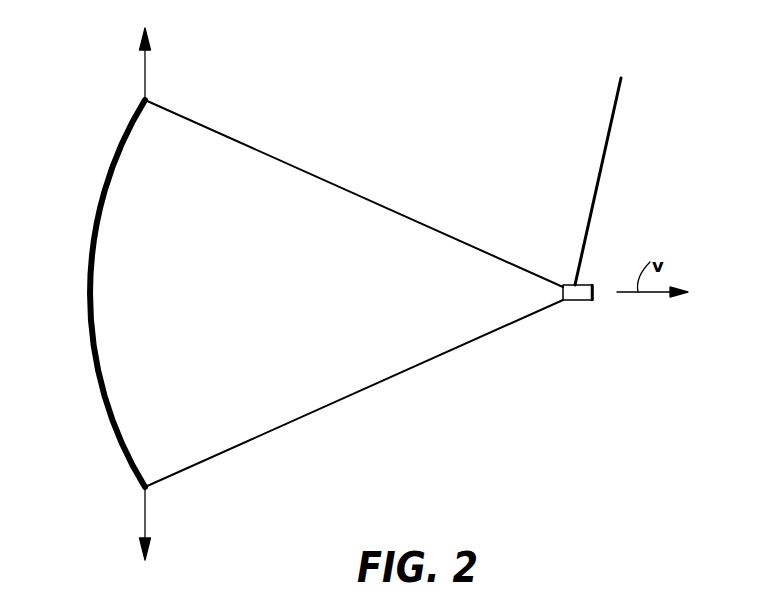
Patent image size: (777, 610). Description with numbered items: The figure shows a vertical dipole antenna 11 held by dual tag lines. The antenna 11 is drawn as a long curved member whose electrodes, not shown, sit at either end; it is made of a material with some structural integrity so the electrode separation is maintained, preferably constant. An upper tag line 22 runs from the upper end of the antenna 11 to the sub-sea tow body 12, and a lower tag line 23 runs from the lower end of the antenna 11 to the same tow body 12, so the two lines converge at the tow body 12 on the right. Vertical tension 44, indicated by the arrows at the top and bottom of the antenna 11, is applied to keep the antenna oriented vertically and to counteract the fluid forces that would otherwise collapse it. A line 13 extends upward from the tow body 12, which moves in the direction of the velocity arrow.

The dipole antenna 11 is at (105, 185).
The sub-sea tow body 12 is at (573, 300).
The support arm 13 is at (610, 140).
The upper tag line 22 is at (393, 213).
The lower tag line 23 is at (393, 373).
The vertical tension 44 is at (145, 82).